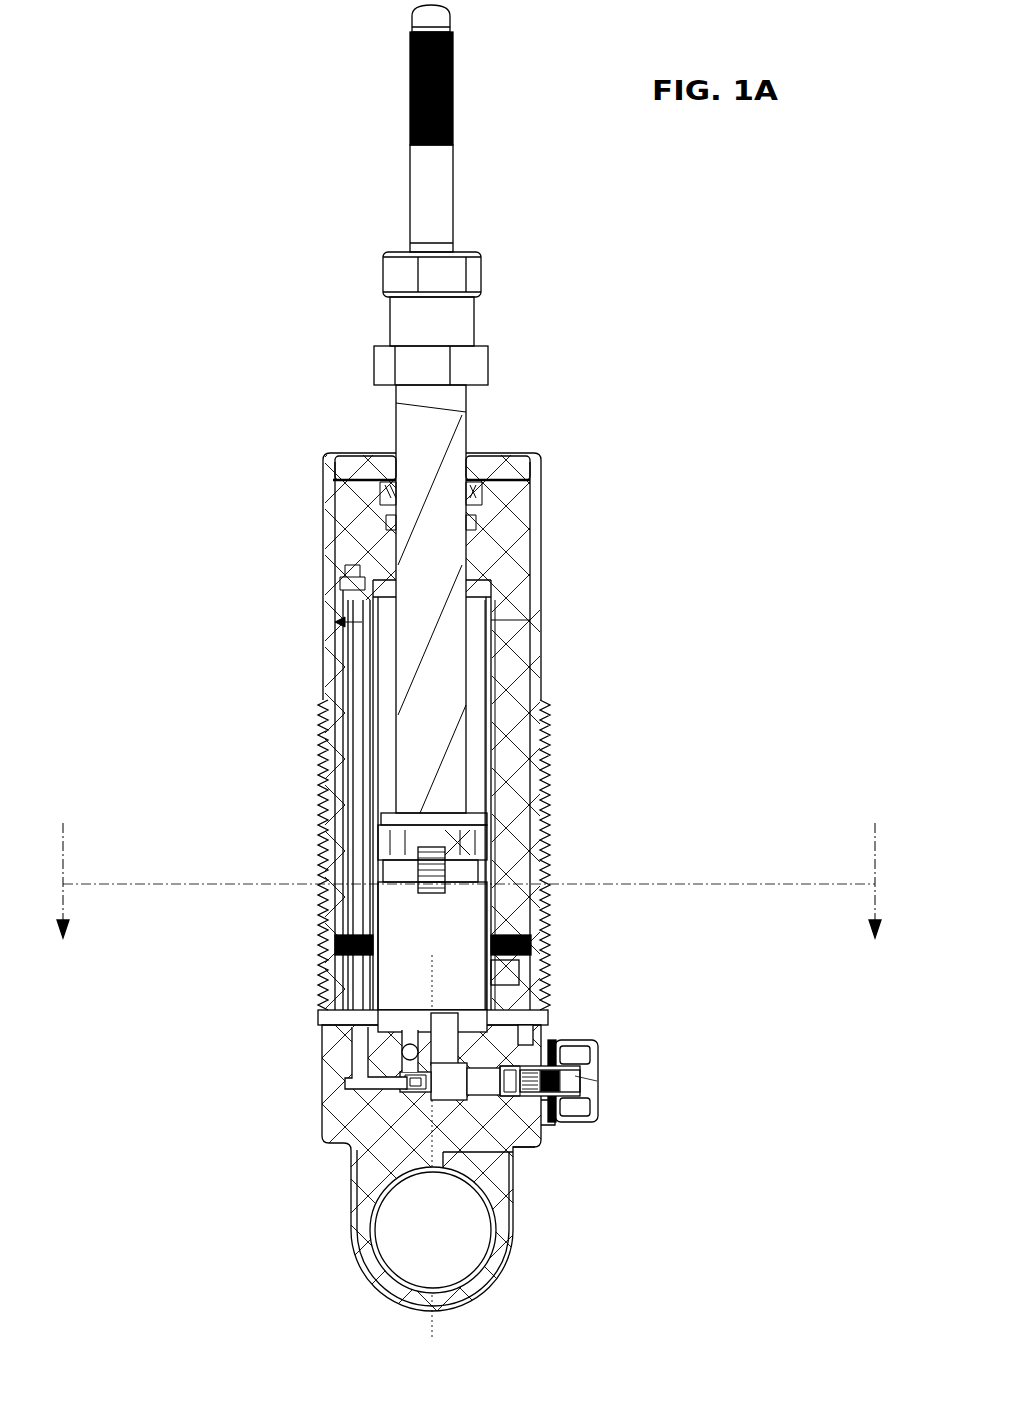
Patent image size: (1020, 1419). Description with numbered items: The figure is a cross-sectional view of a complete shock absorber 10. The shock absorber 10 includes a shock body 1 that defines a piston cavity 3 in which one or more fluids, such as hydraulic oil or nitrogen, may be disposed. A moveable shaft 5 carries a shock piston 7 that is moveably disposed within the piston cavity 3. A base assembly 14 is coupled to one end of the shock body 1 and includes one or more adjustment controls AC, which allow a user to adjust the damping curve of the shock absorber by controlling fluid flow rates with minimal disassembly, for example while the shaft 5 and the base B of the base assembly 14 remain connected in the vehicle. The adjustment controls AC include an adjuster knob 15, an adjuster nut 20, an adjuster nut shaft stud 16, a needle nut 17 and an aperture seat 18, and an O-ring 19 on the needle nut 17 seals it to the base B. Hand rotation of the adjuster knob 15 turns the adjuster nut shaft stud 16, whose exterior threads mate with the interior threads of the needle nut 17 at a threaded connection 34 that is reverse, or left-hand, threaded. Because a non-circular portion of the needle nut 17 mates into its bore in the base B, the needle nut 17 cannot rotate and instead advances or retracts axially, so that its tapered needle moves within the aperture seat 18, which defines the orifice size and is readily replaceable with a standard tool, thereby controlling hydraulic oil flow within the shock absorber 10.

The shock absorber 10 is at (89, 90).
The moveable shaft 5 is at (420, 452).
The piston cavity 3 is at (488, 655).
The shock body 1 is at (533, 645).
The shock piston 7 is at (478, 821).
The base assembly 14 is at (345, 1112).
The adjuster knob 15 is at (600, 1053).
The adjuster nut shaft stud 16 is at (590, 1100).
The needle nut 17 is at (558, 1044).
The aperture seat 18 is at (360, 1158).
The O-ring 19 is at (532, 1142).
The adjuster nut 20 is at (553, 1120).
The threaded connection 34 is at (557, 1110).
The adjustment controls AC is at (620, 1090).
The base B is at (380, 1283).